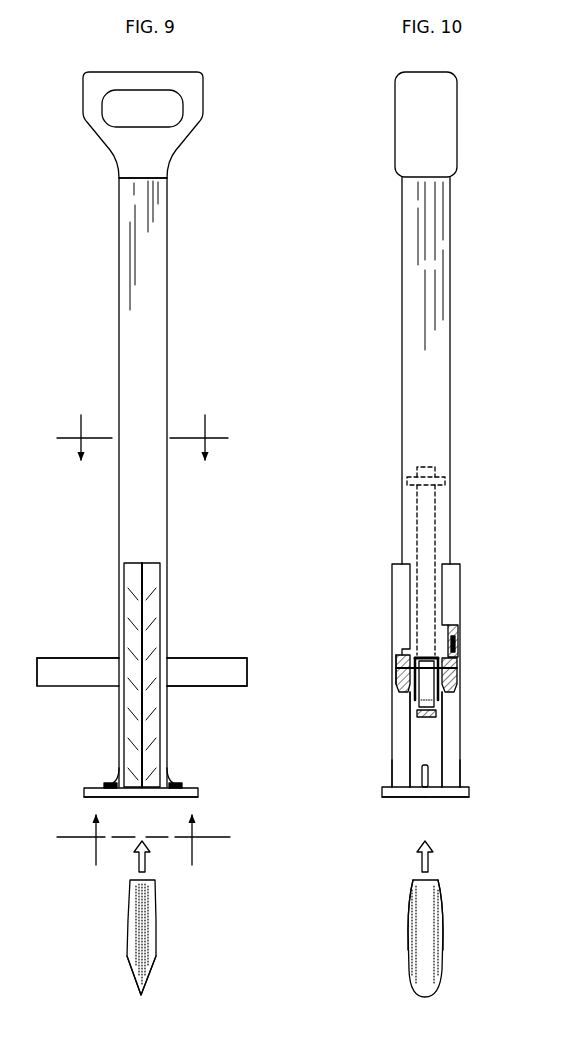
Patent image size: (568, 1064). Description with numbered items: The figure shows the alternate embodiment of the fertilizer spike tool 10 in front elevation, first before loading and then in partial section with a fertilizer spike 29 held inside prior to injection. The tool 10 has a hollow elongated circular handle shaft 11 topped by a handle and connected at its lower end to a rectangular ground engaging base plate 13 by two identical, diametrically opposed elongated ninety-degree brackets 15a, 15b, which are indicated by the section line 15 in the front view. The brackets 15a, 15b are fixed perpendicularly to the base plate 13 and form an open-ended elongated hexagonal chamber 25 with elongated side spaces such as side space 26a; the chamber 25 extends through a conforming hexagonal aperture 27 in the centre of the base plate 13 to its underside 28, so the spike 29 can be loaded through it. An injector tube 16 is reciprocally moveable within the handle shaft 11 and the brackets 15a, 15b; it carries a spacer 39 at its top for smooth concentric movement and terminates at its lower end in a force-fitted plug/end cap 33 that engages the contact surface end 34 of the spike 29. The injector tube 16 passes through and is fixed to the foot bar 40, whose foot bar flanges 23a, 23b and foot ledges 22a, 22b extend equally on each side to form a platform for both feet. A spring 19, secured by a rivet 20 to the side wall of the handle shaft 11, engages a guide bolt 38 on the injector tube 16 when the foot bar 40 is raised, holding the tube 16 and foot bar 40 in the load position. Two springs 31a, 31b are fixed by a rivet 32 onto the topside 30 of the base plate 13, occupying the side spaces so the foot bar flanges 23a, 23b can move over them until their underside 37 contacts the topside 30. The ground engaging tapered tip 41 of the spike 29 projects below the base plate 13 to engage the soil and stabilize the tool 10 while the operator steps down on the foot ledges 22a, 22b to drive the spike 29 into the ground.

In FIG. 9, the tool 10 is at (105, 217).
In FIG. 10, the tool 10 is at (385, 217).
In FIG. 9, the handle shaft 11 is at (204, 99).
In FIG. 10, the handle shaft 11 is at (457, 98).
In FIG. 9, the base plate 13 is at (200, 792).
In FIG. 10, the base plate 13 is at (380, 790).
In FIG. 9, the section line 15- 15 is at (143, 437).
In FIG. 9, the bracket 15a is at (118, 723).
In FIG. 10, the bracket 15a is at (390, 580).
In FIG. 10, the bracket 15b is at (462, 580).
In FIG. 9, the injector tube 16 is at (143, 840).
In FIG. 10, the injector tube 16 is at (419, 705).
In FIG. 10, the spring 19 is at (458, 656).
In FIG. 10, the rivet 20 is at (458, 640).
In FIG. 9, the foot ledge 22a is at (80, 656).
In FIG. 10, the foot ledge 22a is at (426, 650).
In FIG. 9, the foot ledge 22b is at (199, 656).
In FIG. 10, the foot ledge 22b is at (462, 668).
In FIG. 9, the foot bar flange 23a is at (42, 676).
In FIG. 10, the foot bar flange 23a is at (398, 668).
In FIG. 9, the foot bar flange 23b is at (212, 672).
In FIG. 10, the chamber 25 is at (424, 750).
In FIG. 10, the elongated side space 26a is at (443, 733).
In FIG. 9, the aperture 27 is at (133, 799).
In FIG. 10, the aperture 27 is at (417, 798).
In FIG. 10, the underside of base plate 28 is at (455, 798).
In FIG. 9, the fertilizer spike 29 is at (160, 928).
In FIG. 10, the fertilizer spike 29 is at (452, 931).
In FIG. 9, the topside of base plate 30 is at (190, 782).
In FIG. 10, the topside of base plate 30 is at (462, 782).
In FIG. 9, the spring 31a is at (119, 768).
In FIG. 10, the spring 31a is at (395, 768).
In FIG. 9, the spring 31b is at (167, 768).
In FIG. 9, the rivet 32 is at (112, 784).
In FIG. 10, the rivet 32 is at (422, 772).
In FIG. 10, the plug/end cap 33 is at (414, 713).
In FIG. 9, the contact surface end 34 is at (150, 873).
In FIG. 9, the underside of foot bar flanges 37 is at (238, 689).
In FIG. 10, the guide bolt 38 is at (397, 673).
In FIG. 10, the spacer 39 is at (407, 481).
In FIG. 9, the foot bar 40 is at (251, 673).
In FIG. 9, the ground engaging tapered tip 41 is at (152, 975).
In FIG. 10, the ground engaging tapered tip 41 is at (444, 975).